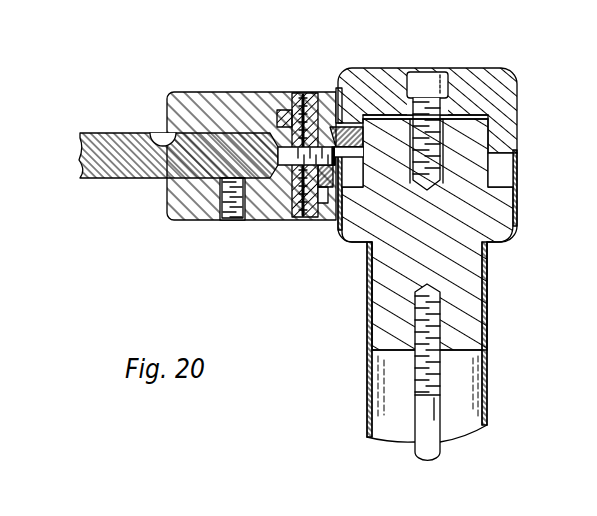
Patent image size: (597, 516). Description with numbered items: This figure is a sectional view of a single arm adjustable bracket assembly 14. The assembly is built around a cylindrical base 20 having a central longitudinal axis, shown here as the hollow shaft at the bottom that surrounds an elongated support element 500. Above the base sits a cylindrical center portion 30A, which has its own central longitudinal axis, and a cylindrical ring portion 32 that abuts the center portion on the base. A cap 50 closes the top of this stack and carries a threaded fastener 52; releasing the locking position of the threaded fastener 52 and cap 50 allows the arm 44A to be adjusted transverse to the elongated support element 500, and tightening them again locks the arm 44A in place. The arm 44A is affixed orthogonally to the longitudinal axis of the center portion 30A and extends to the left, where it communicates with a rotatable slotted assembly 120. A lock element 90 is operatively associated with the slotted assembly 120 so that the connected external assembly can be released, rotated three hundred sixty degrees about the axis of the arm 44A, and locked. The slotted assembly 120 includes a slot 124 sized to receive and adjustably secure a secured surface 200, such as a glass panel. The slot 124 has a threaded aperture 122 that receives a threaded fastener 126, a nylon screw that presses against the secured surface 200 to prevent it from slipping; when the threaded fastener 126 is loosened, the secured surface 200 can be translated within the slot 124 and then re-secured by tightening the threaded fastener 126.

The adjustable bracket assembly 14 is at (274, 54).
The slotted assembly 120 is at (207, 91).
The slot 124 is at (149, 132).
The arm 44A is at (326, 90).
The threaded fastener 52 is at (432, 82).
The cap 50 is at (488, 67).
The cylindrical center portion 30A is at (519, 117).
The cylindrical ring portion 32 is at (517, 190).
The secured surface 200 is at (135, 172).
The threaded aperture 122 is at (220, 210).
The threaded fastener 126 is at (236, 219).
The lock element 90 is at (300, 209).
The cylindrical base 20 is at (383, 320).
The elongated support element 500 is at (488, 363).